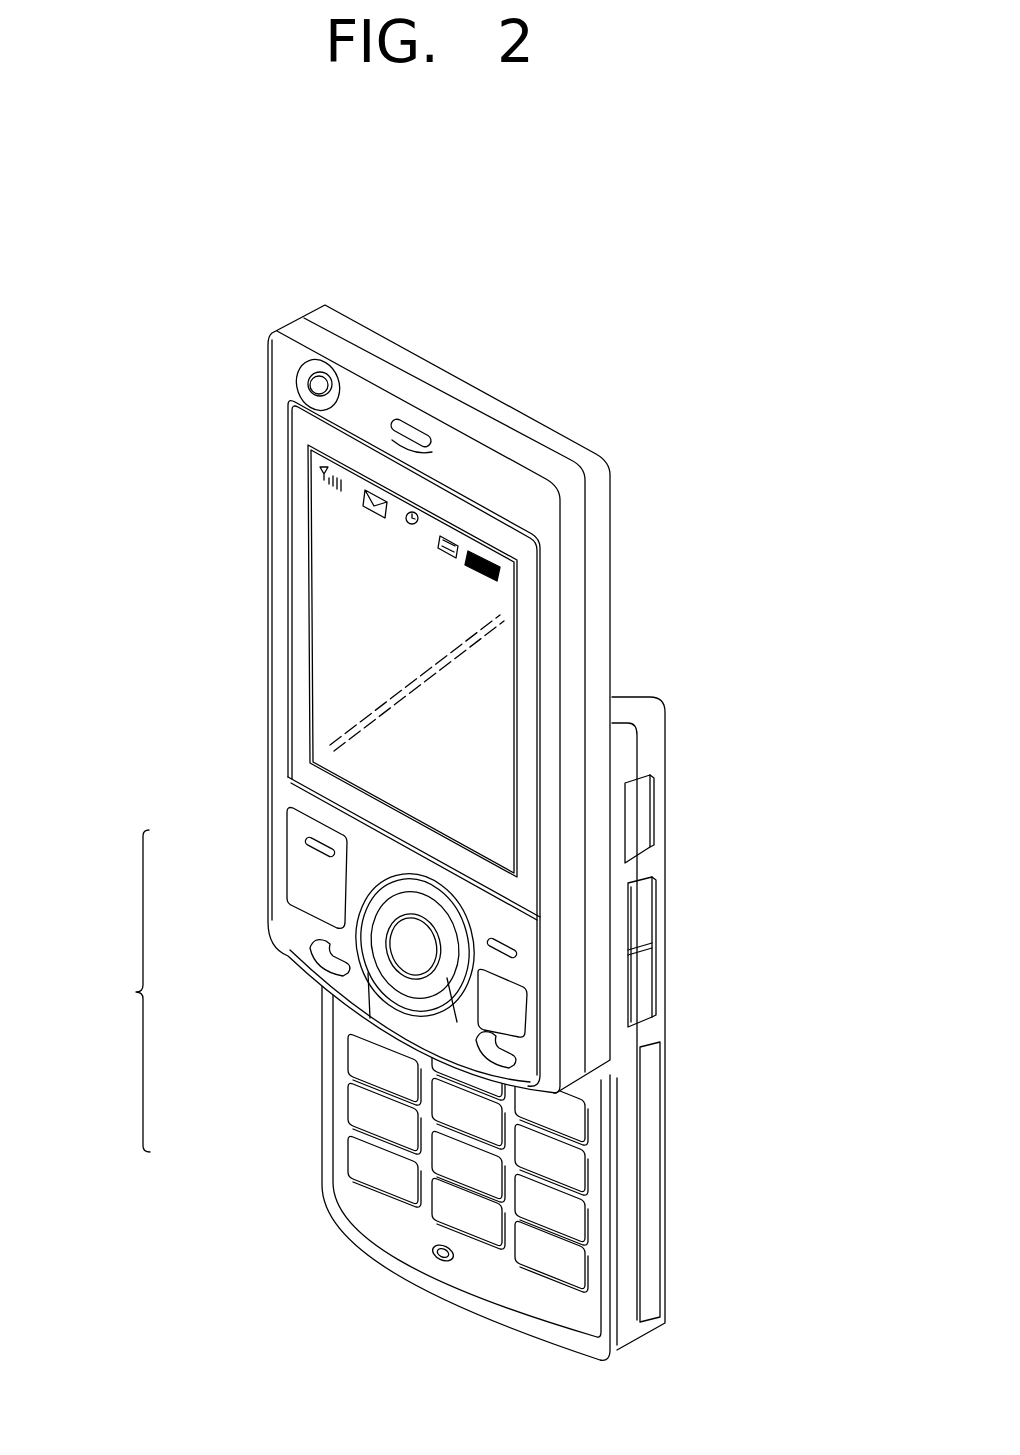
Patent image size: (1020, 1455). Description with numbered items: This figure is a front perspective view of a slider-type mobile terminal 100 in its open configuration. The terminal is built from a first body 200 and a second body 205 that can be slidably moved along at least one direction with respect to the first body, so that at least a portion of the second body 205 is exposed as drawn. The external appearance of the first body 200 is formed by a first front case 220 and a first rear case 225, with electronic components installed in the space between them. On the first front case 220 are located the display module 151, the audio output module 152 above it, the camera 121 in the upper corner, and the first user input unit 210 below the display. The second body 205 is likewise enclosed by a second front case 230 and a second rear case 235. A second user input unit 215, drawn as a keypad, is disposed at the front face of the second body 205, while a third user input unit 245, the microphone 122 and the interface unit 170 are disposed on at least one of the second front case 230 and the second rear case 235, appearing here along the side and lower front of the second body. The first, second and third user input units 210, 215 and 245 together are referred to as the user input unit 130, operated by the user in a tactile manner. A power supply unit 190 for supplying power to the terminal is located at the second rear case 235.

The mobile terminal 100 is at (645, 350).
The camera 121 is at (322, 386).
The microphone 122 is at (443, 1262).
The user input unit 130 is at (117, 991).
The display module 151 is at (328, 596).
The audio output module 152 is at (411, 432).
The interface unit 170 is at (640, 810).
The power supply unit 190 is at (657, 1195).
The first body 200 is at (222, 479).
The second body 205 is at (324, 1268).
The first user input unit 210 is at (303, 880).
The second user input unit 215 is at (362, 1149).
The first front case 220 is at (568, 554).
The first rear case 225 is at (597, 522).
The second front case 230 is at (637, 768).
The second rear case 235 is at (627, 714).
The third user input unit 245 is at (643, 990).